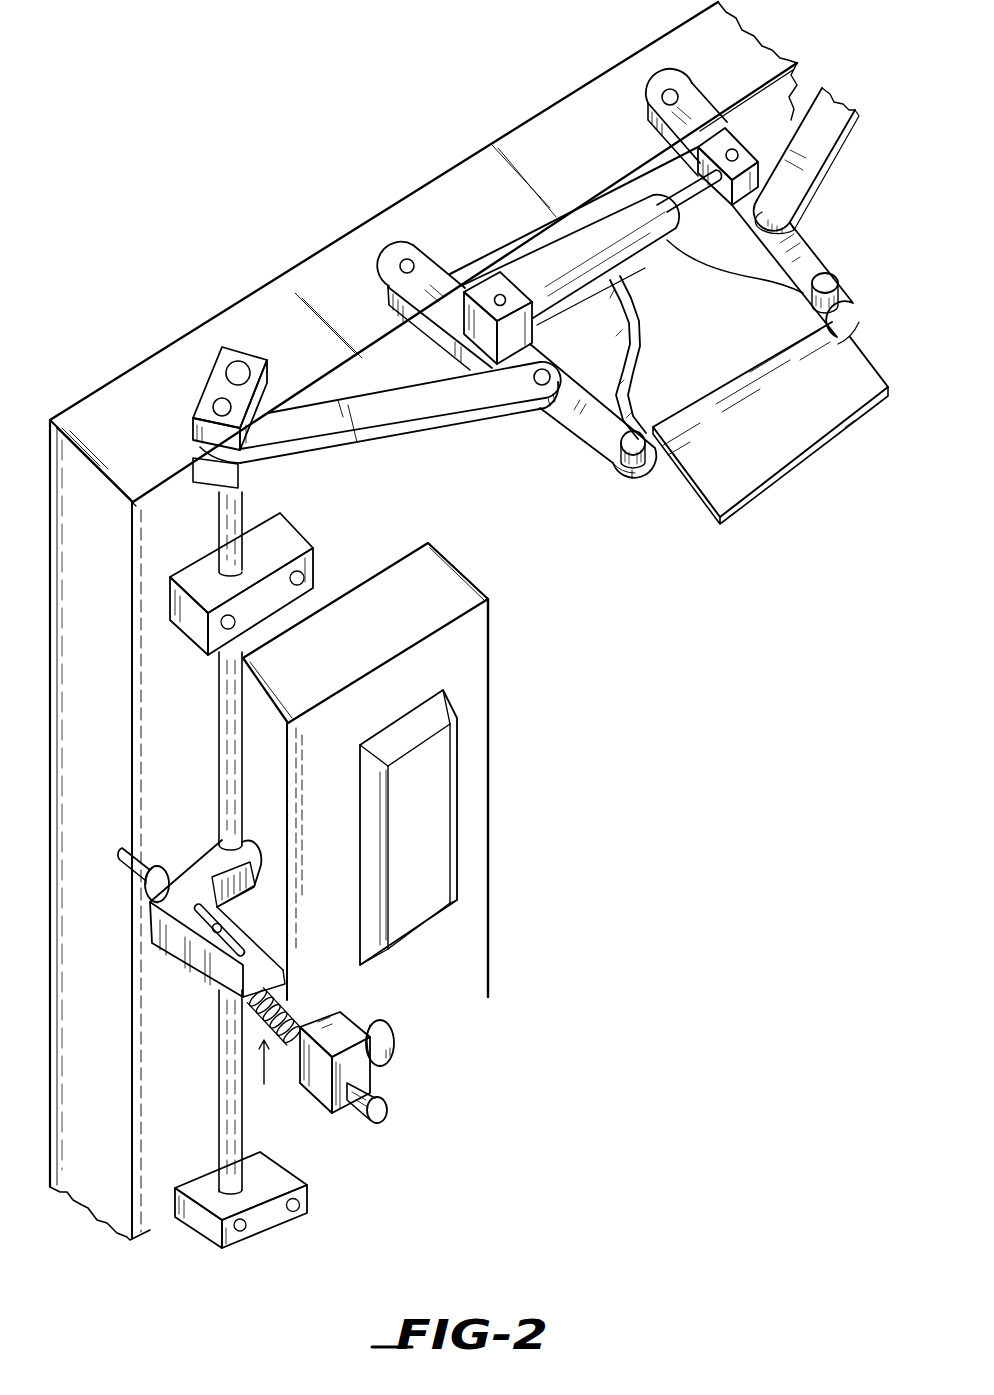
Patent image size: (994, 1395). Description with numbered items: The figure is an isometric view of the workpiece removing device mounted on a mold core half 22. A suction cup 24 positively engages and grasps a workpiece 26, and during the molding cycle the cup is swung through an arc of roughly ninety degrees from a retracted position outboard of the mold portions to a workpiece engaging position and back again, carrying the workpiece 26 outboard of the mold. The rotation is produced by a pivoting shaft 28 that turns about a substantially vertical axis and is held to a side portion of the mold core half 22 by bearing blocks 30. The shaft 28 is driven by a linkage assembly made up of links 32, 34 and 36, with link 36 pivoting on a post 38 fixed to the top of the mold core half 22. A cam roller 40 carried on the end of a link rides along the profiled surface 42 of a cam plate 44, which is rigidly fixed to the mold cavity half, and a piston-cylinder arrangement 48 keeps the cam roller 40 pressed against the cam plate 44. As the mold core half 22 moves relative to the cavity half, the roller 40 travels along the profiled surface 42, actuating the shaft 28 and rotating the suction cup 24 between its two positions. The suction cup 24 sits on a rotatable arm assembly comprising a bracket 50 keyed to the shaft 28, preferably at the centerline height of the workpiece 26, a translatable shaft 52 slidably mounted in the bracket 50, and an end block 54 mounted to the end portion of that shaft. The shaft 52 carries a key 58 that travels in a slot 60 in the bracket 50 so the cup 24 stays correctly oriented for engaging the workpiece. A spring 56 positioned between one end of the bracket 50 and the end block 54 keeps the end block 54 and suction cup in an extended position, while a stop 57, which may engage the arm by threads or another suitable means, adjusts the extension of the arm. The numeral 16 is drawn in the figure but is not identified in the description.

The pin 16 is at (357, 1112).
The mold core half 22 is at (432, 507).
The suction cup 24 is at (395, 1049).
The workpiece 26 is at (438, 858).
The pivoting shaft 28 is at (220, 768).
The bearing blocks 30 is at (289, 526).
The link 32 is at (212, 381).
The link 34 is at (413, 400).
The link 36 is at (432, 298).
The post 38 is at (411, 259).
The cam roller 40 is at (627, 462).
The profiled surface 42 is at (708, 252).
The cam plate 44 is at (780, 414).
The piston-cylinder arrangement 48 is at (607, 243).
The bracket 50 is at (198, 876).
The translatable shaft 52 is at (264, 1080).
The end block 54 is at (343, 1028).
The spring 56 is at (274, 1007).
The stop 57 is at (133, 885).
The key 58 is at (214, 934).
The slot 60 is at (230, 940).